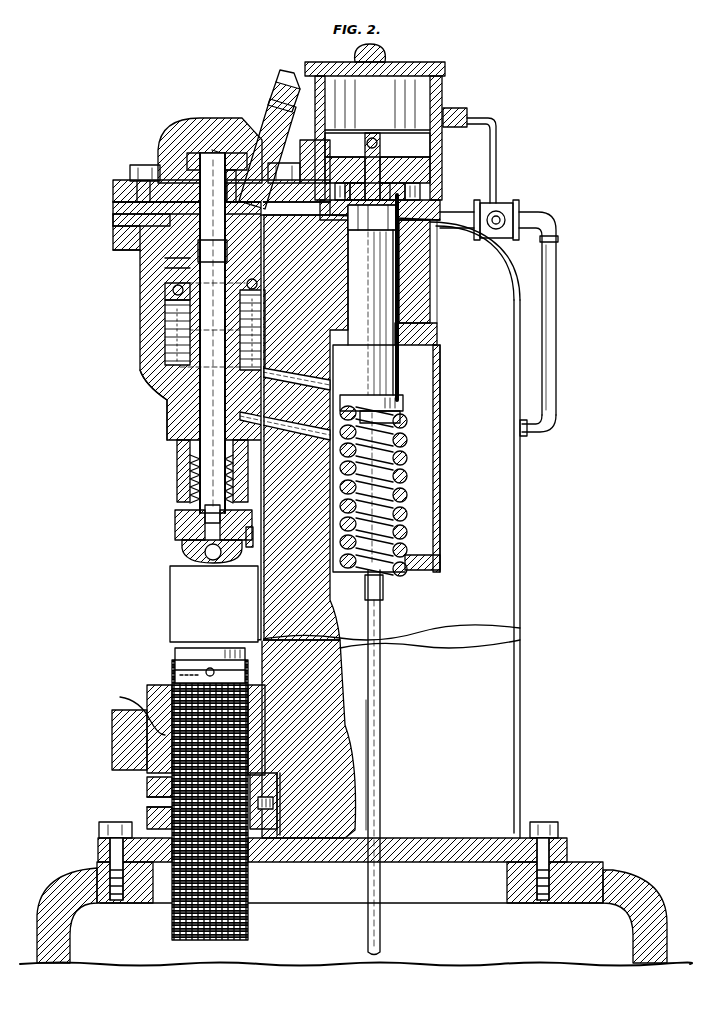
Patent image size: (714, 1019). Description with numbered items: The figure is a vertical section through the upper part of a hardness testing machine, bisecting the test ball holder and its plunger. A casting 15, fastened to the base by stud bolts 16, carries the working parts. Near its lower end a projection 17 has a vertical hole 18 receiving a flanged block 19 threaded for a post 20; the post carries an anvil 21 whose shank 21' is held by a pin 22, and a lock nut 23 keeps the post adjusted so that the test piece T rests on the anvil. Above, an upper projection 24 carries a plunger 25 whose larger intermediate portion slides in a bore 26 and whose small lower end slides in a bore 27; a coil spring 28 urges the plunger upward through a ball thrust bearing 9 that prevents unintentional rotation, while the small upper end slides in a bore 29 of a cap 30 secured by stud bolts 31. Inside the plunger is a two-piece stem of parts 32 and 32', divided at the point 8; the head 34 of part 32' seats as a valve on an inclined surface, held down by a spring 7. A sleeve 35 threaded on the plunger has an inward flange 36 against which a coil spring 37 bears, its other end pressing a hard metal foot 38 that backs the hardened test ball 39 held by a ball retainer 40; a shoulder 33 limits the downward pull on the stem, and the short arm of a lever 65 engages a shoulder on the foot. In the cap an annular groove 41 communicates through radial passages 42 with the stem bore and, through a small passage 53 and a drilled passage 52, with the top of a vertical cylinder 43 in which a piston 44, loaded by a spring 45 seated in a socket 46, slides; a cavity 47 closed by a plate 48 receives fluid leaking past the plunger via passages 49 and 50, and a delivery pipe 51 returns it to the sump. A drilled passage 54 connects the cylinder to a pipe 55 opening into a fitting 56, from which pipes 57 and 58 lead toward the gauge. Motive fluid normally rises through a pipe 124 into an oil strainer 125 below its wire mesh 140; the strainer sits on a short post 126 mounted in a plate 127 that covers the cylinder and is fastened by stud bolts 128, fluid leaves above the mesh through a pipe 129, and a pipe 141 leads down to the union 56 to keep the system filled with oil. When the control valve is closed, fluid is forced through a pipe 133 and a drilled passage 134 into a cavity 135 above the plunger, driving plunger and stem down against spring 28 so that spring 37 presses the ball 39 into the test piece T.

The spring 7 is at (113, 181).
The point of division 8 is at (175, 270).
The ball thrust bearing 9 is at (165, 297).
The casting 15 is at (520, 575).
The stud bolts 16 is at (105, 822).
The projection 17 is at (112, 749).
The vertical hole 18 is at (132, 710).
The flanged block 19 is at (158, 686).
The post 20 is at (172, 927).
The anvil 21 is at (187, 663).
The shank 21' is at (177, 668).
The pin 22 is at (215, 670).
The lock nut 23 is at (150, 795).
The upper projection 24 is at (140, 357).
The plunger 25 is at (152, 407).
The bore 26 is at (178, 260).
The bore 27 is at (178, 378).
The coil spring 28 is at (167, 325).
The bore 29 is at (180, 203).
The cap 30 is at (188, 131).
The stud bolts 31 is at (140, 165).
The stem part 32 is at (188, 333).
The stem part 32' is at (108, 244).
The shoulder 33 is at (172, 284).
The head 34 is at (210, 152).
The sleeve 35 is at (180, 484).
The flange 36 is at (178, 462).
The coil spring 37 is at (195, 512).
The foot 38 is at (175, 522).
The test ball 39 is at (213, 560).
The ball retainer 40 is at (185, 548).
The annular groove 41 is at (170, 210).
The radial passages 42 is at (200, 232).
The vertical cylinder 43 is at (405, 278).
The piston 44 is at (383, 303).
The spring 45 is at (437, 456).
The socket 46 is at (420, 572).
The cavity 47 is at (410, 522).
The plate 48 is at (440, 490).
The passage 49 is at (395, 382).
The passage 50 is at (393, 442).
The delivery pipe 51 is at (380, 750).
The drilled passage 52 is at (320, 245).
The small passage 53 is at (303, 150).
The drilled passage 54 is at (435, 253).
The pipe 55 is at (460, 215).
The fitting 56 is at (510, 208).
The pipe 57 is at (552, 315).
The pipe 58 is at (526, 436).
The lever 65 is at (248, 545).
The pipe 124 is at (380, 143).
The oil strainer 125 is at (443, 104).
The short post 126 is at (430, 165).
The plate 127 is at (428, 200).
The stud bolts 128 is at (430, 180).
The pipe 129 is at (380, 805).
The pipe 133 is at (287, 100).
The drilled passage 134 is at (258, 128).
The cavity 135 is at (222, 150).
The wire mesh 140 is at (397, 130).
The pipe 141 is at (500, 160).
The test piece T is at (170, 605).